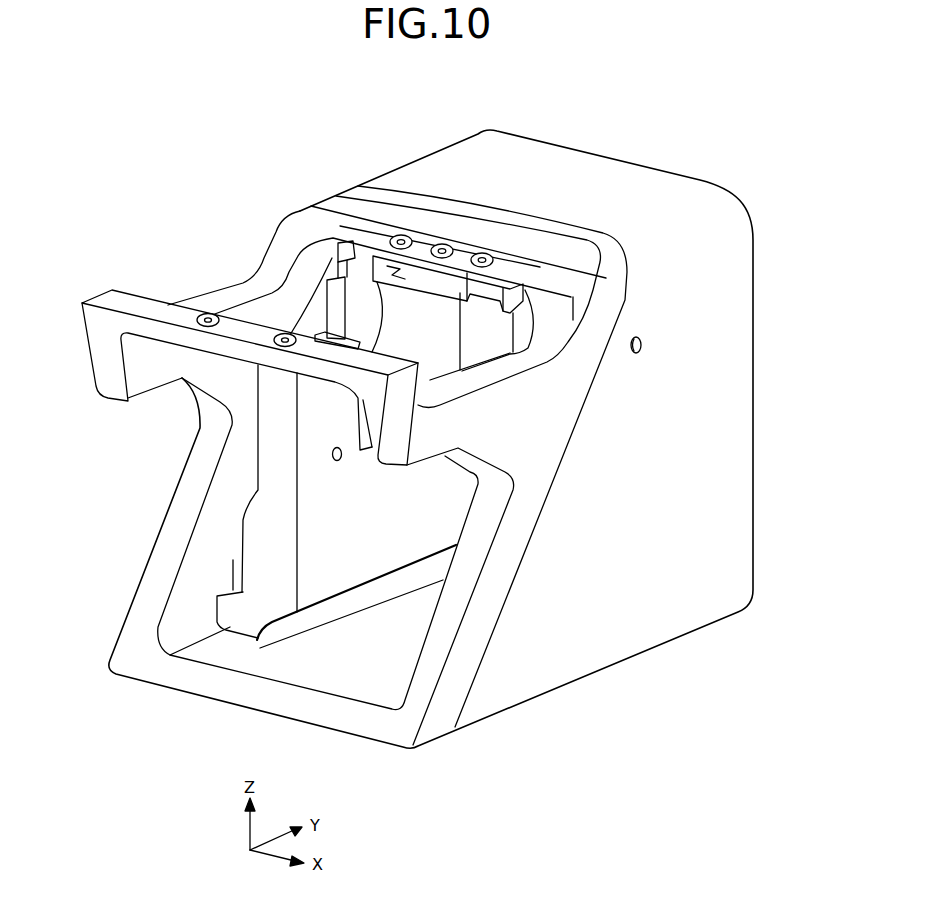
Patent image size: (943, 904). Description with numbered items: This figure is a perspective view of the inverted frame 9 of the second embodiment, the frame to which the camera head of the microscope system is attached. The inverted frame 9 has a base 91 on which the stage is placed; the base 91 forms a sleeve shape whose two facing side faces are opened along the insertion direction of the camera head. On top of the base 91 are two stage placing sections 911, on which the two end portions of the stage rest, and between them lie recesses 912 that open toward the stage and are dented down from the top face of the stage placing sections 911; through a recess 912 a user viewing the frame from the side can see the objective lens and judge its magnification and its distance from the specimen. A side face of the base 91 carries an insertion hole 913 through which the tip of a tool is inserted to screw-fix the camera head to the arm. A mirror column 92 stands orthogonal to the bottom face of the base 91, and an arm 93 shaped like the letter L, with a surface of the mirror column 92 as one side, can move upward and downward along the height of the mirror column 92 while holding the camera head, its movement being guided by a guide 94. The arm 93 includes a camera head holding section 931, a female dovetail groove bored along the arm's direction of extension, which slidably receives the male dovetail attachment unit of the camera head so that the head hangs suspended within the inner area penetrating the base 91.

The inverted frame 9 is at (642, 157).
The base 91 is at (609, 666).
The stage placing sections 911 is at (137, 303).
The recesses 912 is at (217, 299).
The insertion hole 913 is at (640, 352).
The mirror column 92 is at (263, 553).
The arm 93 is at (500, 297).
The camera head holding section 931 is at (467, 290).
The guide 94 is at (327, 285).